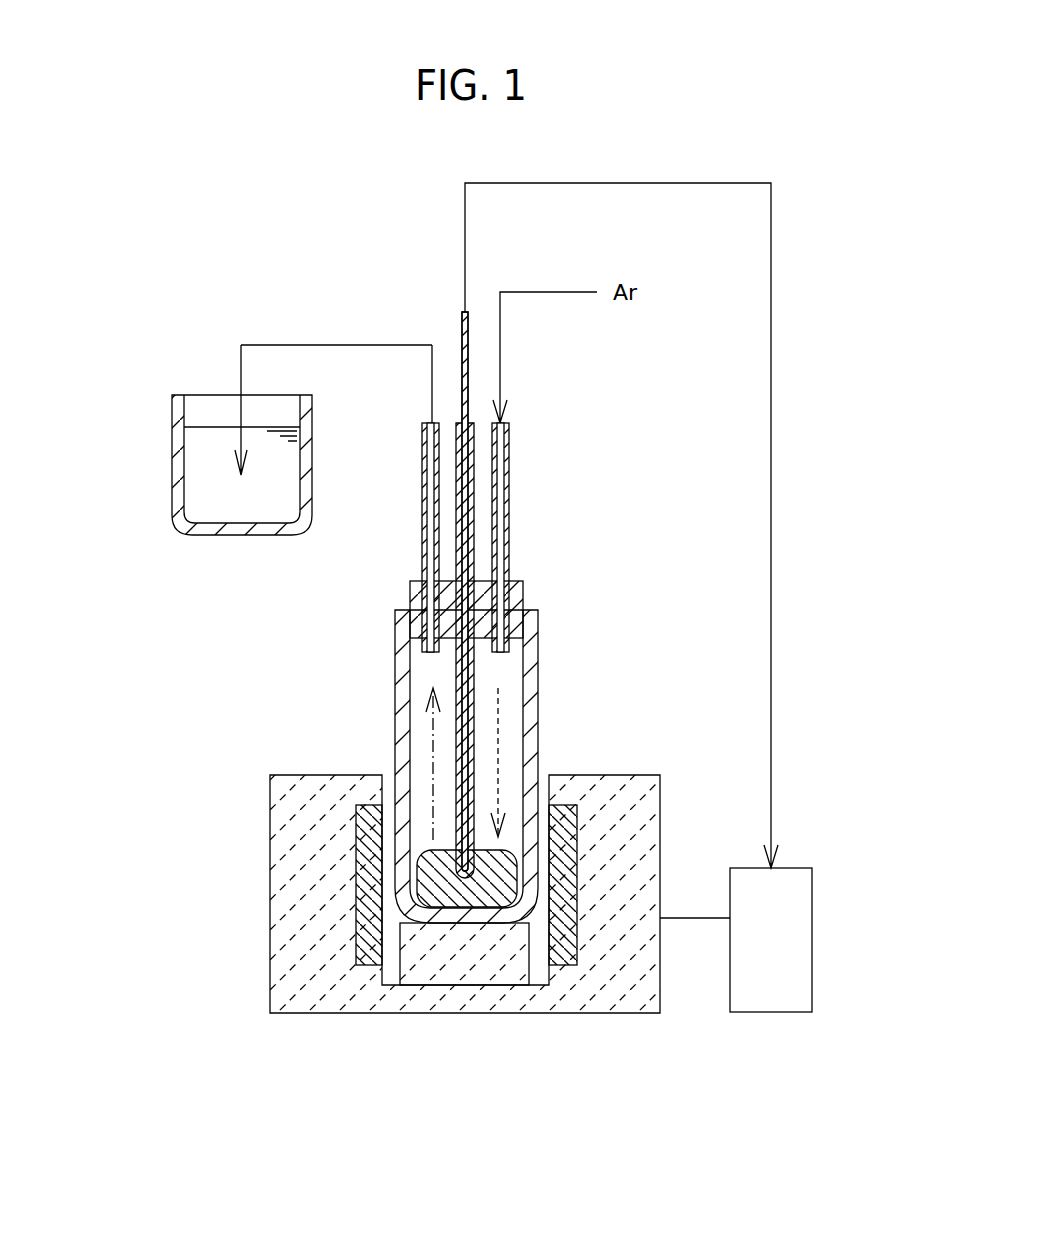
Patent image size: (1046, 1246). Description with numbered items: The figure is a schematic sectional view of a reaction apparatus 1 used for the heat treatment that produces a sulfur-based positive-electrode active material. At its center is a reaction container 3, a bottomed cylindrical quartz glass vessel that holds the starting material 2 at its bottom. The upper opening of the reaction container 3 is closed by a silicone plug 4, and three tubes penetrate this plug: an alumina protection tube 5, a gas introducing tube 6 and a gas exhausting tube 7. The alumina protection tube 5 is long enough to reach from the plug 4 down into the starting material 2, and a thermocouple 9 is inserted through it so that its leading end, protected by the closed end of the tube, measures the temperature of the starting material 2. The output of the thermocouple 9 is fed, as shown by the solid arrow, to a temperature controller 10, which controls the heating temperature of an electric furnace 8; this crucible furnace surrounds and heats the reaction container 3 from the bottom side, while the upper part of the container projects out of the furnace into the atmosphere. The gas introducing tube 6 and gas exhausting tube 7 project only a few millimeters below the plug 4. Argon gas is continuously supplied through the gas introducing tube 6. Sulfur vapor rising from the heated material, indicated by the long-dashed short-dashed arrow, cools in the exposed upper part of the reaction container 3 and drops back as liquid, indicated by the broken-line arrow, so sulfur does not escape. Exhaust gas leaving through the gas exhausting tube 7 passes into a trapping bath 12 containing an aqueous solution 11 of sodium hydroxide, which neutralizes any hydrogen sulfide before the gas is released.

The reaction apparatus 1 is at (252, 212).
The starting material 2 is at (482, 892).
The reaction container 3 is at (538, 657).
The silicone plug 4 is at (523, 587).
The alumina protection tube 5 is at (474, 733).
The gas introducing tube 6 is at (509, 480).
The gas exhausting tube 7 is at (422, 538).
The electric furnace 8 is at (282, 893).
The thermocouple 9 is at (463, 335).
The temperature controller 10 is at (769, 1002).
The aqueous solution of sodium hydroxide 11 is at (230, 512).
The trapping bath 12 is at (177, 473).